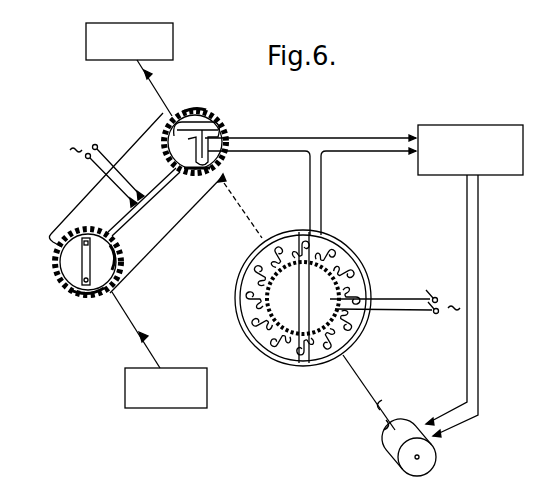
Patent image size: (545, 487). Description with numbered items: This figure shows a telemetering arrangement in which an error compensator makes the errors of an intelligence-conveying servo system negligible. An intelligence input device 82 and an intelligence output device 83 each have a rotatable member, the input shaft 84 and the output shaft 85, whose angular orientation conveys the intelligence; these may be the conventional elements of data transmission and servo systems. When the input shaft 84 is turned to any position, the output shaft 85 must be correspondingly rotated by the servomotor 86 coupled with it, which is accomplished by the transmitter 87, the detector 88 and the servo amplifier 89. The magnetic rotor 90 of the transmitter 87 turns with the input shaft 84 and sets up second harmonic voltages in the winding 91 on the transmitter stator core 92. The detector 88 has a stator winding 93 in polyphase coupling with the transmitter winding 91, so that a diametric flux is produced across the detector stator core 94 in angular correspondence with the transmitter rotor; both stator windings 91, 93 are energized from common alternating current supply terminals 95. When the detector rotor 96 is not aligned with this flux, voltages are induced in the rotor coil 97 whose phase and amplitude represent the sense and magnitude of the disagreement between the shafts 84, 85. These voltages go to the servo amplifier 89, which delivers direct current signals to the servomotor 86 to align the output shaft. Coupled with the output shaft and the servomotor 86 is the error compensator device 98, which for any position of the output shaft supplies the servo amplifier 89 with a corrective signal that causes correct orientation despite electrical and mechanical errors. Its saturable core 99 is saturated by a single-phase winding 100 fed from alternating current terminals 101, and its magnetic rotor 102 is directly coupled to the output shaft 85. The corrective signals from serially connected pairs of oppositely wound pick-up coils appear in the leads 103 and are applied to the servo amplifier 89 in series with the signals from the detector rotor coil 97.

The intelligence input device 82 is at (207, 388).
The intelligence output device 83 is at (86, 42).
The input shaft 84 is at (152, 346).
The output shaft 85 is at (142, 73).
The servomotor 86 is at (436, 455).
The transmitter 87 is at (54, 264).
The detector 88 is at (220, 118).
The servo amplifier 89 is at (474, 125).
The magnetic rotor 90 is at (100, 282).
The transmitter winding 91 is at (84, 294).
The transmitter stator core 92 is at (120, 252).
The detector stator winding 93 is at (195, 108).
The detector stator core 94 is at (232, 133).
The alternating current supply terminals 95 is at (88, 159).
The detector rotor 96 is at (190, 177).
The rotor coil 97 is at (194, 143).
The error compensator device 98 is at (367, 267).
The saturable core 99 is at (360, 318).
The single-phase winding 100 is at (288, 276).
The alternating current terminals 101 is at (395, 295).
The magnetic rotor 102 is at (322, 283).
The leads 103 is at (313, 198).